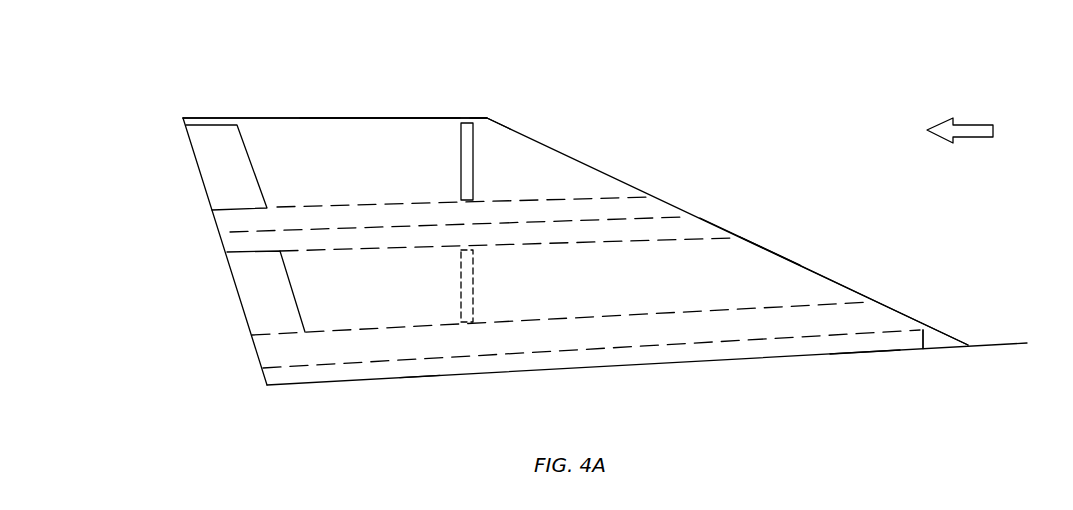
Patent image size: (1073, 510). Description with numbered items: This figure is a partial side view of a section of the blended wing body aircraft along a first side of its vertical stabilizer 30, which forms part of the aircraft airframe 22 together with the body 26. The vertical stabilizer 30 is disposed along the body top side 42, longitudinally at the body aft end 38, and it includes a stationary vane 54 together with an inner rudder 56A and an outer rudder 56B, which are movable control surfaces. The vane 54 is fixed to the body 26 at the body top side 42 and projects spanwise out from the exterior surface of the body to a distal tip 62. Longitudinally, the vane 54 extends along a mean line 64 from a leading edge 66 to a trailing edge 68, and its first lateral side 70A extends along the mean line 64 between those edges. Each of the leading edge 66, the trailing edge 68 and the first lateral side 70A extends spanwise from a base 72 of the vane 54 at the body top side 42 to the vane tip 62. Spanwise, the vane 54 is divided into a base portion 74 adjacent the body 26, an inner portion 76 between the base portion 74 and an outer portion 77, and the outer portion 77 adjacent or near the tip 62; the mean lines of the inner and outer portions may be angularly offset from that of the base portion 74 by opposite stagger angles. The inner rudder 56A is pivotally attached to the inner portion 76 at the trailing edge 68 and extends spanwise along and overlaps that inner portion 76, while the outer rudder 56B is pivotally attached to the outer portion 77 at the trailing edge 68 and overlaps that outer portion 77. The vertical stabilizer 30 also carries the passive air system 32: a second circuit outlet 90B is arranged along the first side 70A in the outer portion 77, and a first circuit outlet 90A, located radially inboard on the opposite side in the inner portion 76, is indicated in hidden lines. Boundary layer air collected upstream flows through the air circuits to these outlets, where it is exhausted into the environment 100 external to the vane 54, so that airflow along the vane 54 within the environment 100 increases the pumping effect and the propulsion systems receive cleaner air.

The environment 100 is at (714, 103).
The airframe 22 is at (775, 157).
The body 26 is at (1018, 338).
The vertical stabilizer 30 is at (540, 128).
The air system 32 is at (481, 138).
The body aft end 38 is at (265, 380).
The body top side 42 is at (923, 330).
The vane 54 is at (413, 110).
The inner rudder 56A is at (238, 295).
The outer rudder 56B is at (195, 163).
The distal tip 62 is at (339, 118).
The mean line 64 is at (332, 228).
The leading edge 66 is at (773, 252).
The trailing edge 68 is at (218, 242).
The first lateral side 70A is at (733, 327).
The base 72 is at (420, 378).
The base portion 74 is at (858, 345).
The inner portion 76 is at (793, 283).
The outer portion 77 is at (568, 180).
The first circuit outlet 90A is at (459, 283).
The second circuit outlet 90B is at (461, 162).